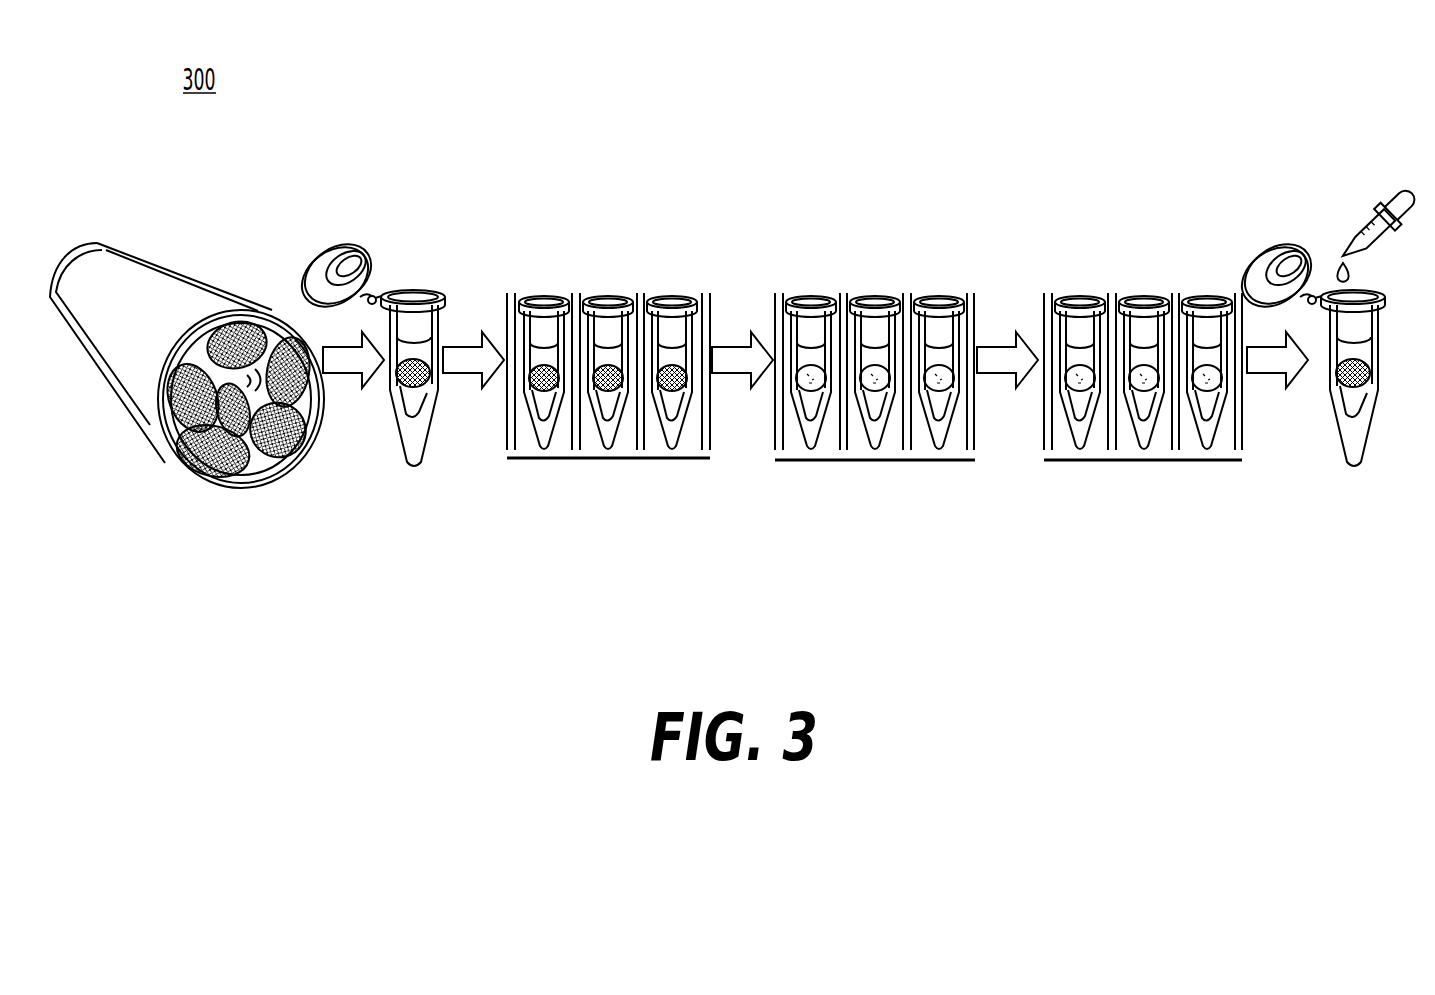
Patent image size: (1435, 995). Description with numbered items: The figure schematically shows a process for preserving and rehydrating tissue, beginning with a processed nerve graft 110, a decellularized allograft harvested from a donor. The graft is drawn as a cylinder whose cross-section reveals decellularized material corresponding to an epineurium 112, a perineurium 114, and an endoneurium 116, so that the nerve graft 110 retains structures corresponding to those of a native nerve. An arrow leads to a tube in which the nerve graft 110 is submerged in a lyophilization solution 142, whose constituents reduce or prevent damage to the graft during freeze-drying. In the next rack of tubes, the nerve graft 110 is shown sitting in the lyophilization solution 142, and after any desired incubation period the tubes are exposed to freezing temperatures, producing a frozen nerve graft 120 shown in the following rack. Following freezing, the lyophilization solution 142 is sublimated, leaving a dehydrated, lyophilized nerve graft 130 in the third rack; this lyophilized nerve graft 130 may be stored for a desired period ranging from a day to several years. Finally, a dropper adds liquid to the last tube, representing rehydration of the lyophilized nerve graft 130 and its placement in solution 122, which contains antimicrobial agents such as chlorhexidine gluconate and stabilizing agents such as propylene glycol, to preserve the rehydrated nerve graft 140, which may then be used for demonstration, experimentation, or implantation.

The nerve graft 110 is at (172, 300).
The epineurium 112 is at (163, 469).
The perineurium 114 is at (208, 478).
The endoneurium 116 is at (242, 465).
The lyophilization solution 142 is at (415, 452).
The frozen nerve graft 120 is at (811, 398).
The lyophilized nerve graft 130 is at (1080, 398).
The solution 122 is at (1353, 452).
The rehydrated nerve graft 140 is at (1353, 396).